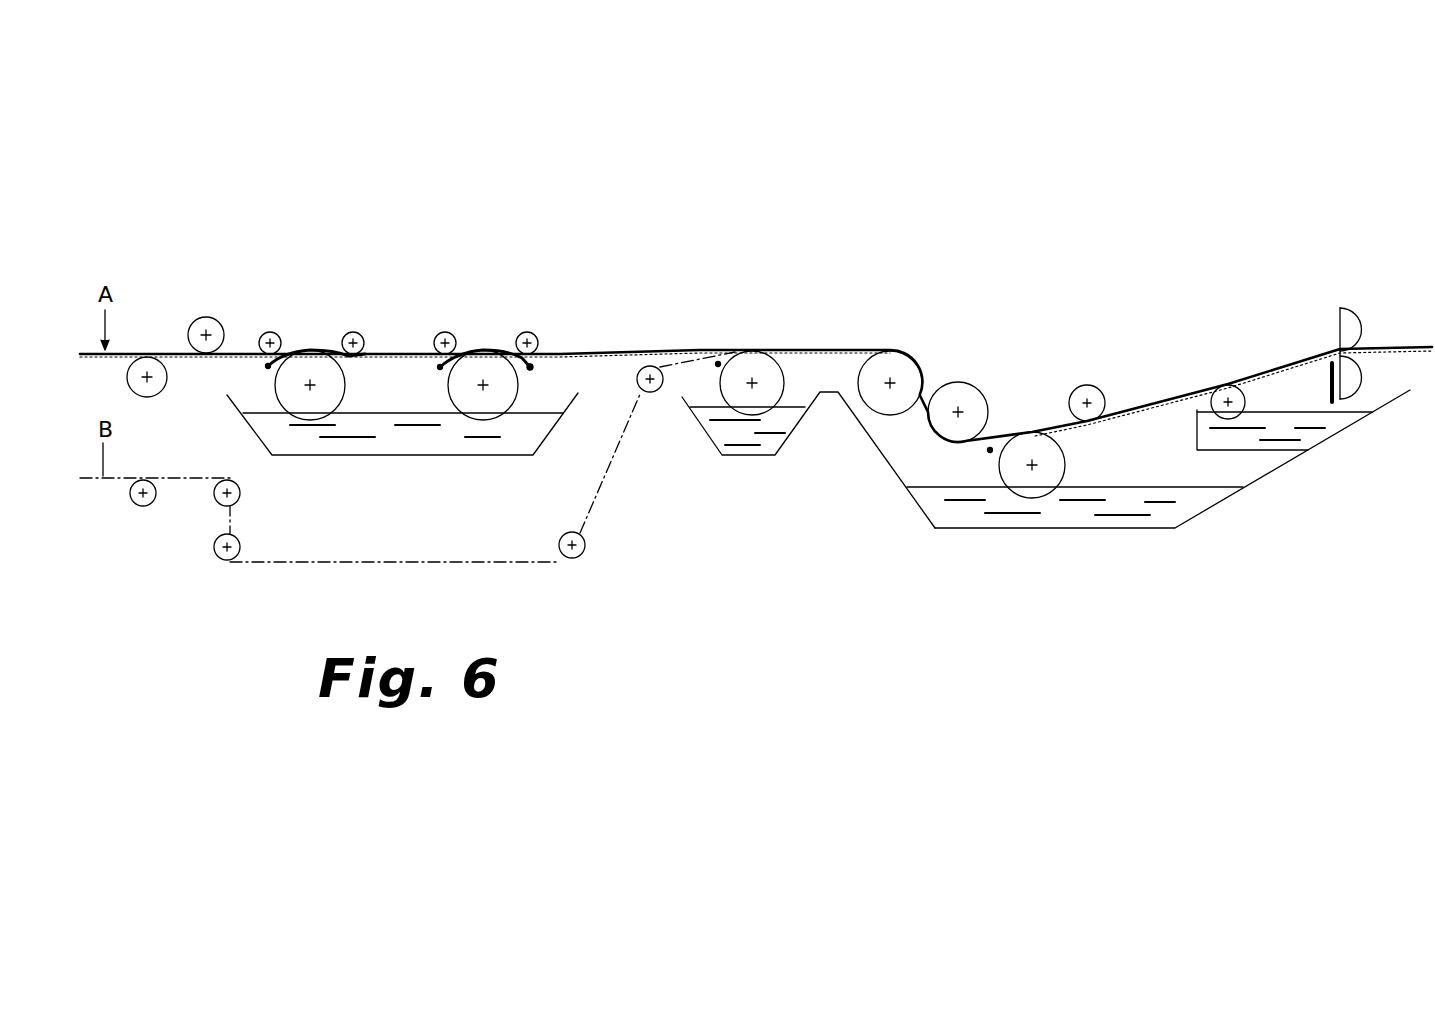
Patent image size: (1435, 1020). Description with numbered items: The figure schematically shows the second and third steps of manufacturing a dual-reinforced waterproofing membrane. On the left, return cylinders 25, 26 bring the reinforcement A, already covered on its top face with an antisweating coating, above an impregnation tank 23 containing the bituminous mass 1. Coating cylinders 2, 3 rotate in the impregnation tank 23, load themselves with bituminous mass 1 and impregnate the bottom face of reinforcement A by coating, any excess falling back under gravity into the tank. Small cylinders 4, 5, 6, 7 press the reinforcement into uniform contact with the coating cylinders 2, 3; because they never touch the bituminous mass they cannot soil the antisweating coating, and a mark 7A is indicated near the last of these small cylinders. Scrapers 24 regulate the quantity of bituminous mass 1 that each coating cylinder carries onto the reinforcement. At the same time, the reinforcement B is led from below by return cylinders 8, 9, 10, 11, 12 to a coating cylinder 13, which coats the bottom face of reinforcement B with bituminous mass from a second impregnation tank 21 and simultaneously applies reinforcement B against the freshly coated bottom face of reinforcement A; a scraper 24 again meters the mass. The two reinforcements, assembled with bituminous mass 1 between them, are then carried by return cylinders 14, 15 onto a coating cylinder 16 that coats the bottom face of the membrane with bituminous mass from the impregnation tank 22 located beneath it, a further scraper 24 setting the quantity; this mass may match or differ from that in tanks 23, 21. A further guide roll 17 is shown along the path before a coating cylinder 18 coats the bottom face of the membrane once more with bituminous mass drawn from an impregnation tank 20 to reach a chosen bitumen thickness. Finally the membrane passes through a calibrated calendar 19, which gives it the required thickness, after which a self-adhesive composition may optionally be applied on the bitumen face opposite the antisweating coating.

The bituminous mass 1 is at (392, 440).
The coating cylinder 2 is at (311, 358).
The coating cylinder 3 is at (486, 360).
The small cylinder 4 is at (270, 332).
The small cylinder 5 is at (353, 332).
The small cylinder 6 is at (445, 332).
The small cylinder 7 is at (527, 332).
The web end 7A is at (533, 376).
The return cylinder 8 is at (140, 508).
The return cylinder 9 is at (215, 505).
The return cylinder 10 is at (225, 562).
The return cylinder 11 is at (584, 552).
The return cylinder 12 is at (650, 365).
The coating cylinder 13 is at (748, 356).
The return cylinder 14 is at (892, 357).
The return cylinder 15 is at (962, 388).
The coating cylinder 16 is at (1032, 438).
The guide roll 17 is at (1085, 386).
The coating cylinder 18 is at (1226, 386).
The calibrated calendar 19 is at (1346, 306).
The impregnation tank 20 is at (1185, 441).
The impregnation tank 21 is at (703, 430).
The impregnation tank 22 is at (905, 500).
The impregnation tank 23 is at (318, 462).
The scraper 24 is at (258, 369).
The return cylinder 25 is at (148, 357).
The return cylinder 26 is at (207, 318).